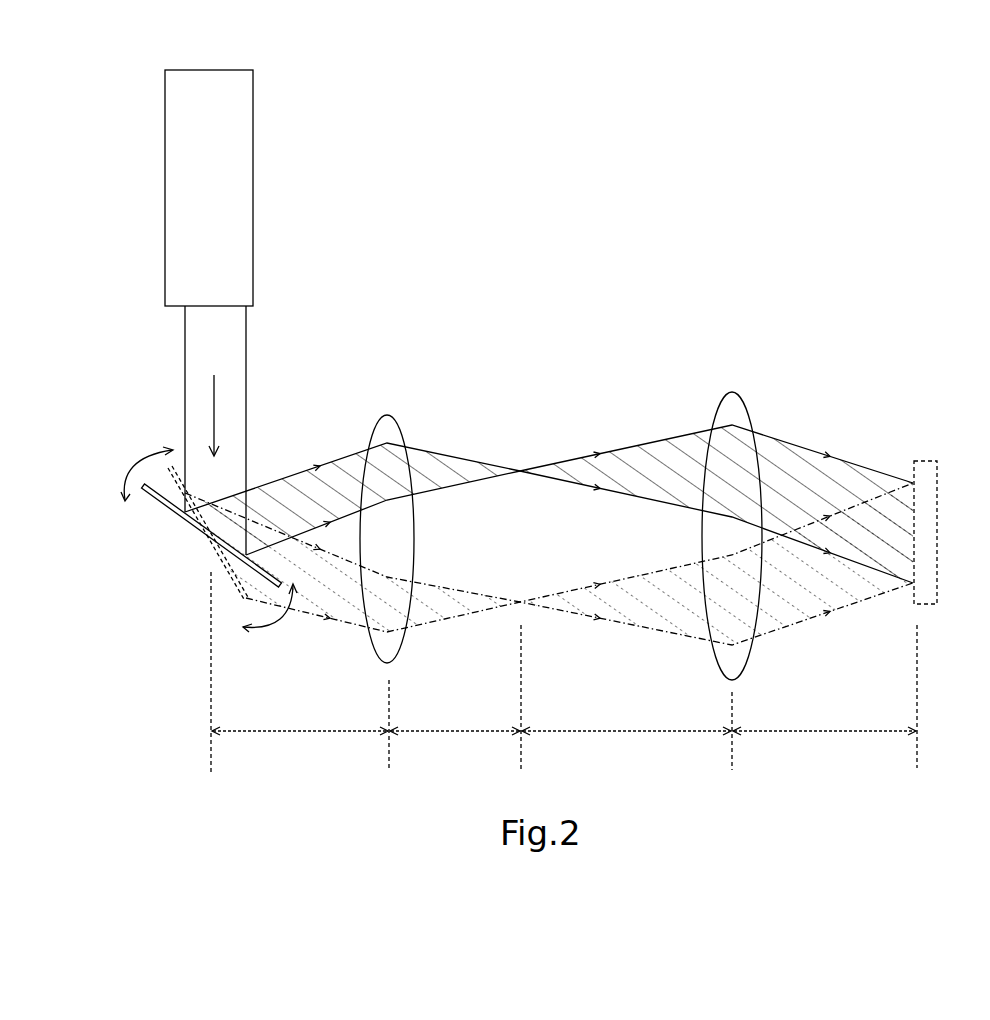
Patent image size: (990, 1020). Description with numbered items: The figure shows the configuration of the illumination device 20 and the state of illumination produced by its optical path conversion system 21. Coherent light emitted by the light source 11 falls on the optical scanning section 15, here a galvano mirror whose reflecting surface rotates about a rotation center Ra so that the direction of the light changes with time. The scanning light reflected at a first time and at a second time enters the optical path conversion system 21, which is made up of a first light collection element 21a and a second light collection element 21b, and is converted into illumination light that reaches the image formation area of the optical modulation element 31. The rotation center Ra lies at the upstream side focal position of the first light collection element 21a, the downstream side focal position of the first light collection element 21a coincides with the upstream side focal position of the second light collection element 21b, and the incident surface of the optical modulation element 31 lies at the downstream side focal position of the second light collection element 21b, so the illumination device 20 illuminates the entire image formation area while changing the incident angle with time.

The light source 11 is at (255, 197).
The optical scanning section 15 is at (160, 508).
The illumination device 20 is at (554, 153).
The optical path conversion system 21 is at (760, 318).
The first light collection element 21a is at (386, 414).
The second light collection element 21b is at (731, 391).
The optical modulation element 31 is at (928, 606).
The rotation center Ra is at (210, 542).